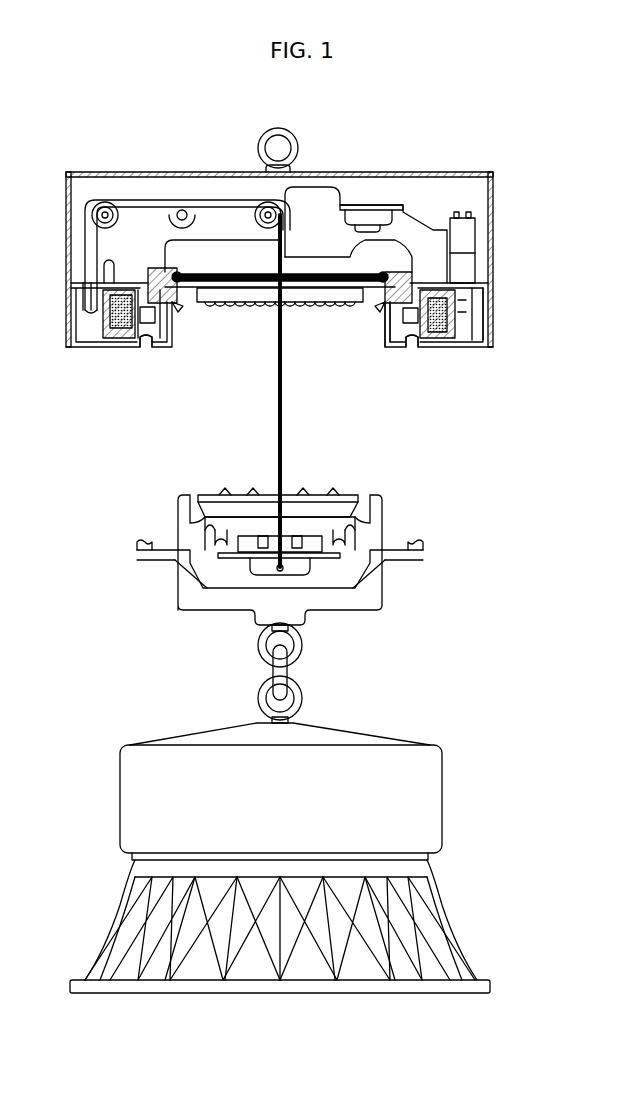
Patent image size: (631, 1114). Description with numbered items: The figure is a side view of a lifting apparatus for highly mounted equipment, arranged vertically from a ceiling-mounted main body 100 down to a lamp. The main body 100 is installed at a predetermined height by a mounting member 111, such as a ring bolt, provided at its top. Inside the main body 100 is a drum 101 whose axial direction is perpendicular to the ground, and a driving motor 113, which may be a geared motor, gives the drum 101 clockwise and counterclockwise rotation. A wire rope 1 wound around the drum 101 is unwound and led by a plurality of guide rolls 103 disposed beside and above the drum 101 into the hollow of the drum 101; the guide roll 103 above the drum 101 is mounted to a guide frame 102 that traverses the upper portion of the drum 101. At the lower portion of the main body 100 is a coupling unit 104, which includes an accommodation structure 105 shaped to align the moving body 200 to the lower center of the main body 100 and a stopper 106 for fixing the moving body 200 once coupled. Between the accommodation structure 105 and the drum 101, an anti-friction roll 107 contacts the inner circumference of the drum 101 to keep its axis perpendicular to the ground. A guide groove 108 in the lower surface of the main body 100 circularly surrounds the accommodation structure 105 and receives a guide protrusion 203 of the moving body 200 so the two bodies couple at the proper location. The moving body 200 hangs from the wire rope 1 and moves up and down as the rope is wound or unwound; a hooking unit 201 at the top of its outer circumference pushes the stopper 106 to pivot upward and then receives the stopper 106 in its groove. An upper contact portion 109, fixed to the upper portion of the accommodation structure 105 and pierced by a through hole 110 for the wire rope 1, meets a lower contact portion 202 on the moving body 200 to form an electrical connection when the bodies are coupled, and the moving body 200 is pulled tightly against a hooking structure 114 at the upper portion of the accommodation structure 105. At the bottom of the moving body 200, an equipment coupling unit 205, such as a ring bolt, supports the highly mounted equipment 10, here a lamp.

The wire rope 1 is at (278, 404).
The highly mounted equipment 10 is at (453, 778).
The main body 100 is at (520, 180).
The drum 101 is at (112, 290).
The guide frame 102 is at (207, 215).
The guide rolls 103 is at (258, 216).
The coupling unit 104 is at (388, 380).
The accommodation structure 105 is at (385, 322).
The stopper 106 is at (378, 306).
The anti-friction roll 107 is at (411, 344).
The guide groove 108 is at (146, 345).
The upper contact portion 109 is at (225, 305).
The through hole 110 is at (285, 300).
The mounting member 111 is at (293, 141).
The driving motor 113 is at (480, 240).
The hooking structure 114 is at (466, 291).
The moving body 200 is at (284, 574).
The hooking unit 201 is at (388, 509).
The lower contact portion 202 is at (337, 465).
The guide protrusion 203 is at (150, 551).
The equipment coupling unit 205 is at (283, 505).